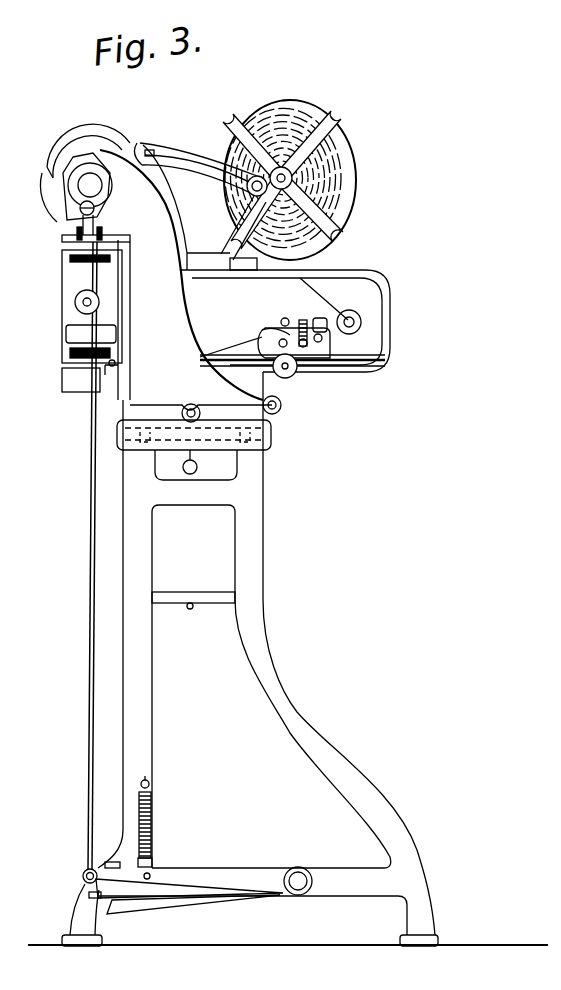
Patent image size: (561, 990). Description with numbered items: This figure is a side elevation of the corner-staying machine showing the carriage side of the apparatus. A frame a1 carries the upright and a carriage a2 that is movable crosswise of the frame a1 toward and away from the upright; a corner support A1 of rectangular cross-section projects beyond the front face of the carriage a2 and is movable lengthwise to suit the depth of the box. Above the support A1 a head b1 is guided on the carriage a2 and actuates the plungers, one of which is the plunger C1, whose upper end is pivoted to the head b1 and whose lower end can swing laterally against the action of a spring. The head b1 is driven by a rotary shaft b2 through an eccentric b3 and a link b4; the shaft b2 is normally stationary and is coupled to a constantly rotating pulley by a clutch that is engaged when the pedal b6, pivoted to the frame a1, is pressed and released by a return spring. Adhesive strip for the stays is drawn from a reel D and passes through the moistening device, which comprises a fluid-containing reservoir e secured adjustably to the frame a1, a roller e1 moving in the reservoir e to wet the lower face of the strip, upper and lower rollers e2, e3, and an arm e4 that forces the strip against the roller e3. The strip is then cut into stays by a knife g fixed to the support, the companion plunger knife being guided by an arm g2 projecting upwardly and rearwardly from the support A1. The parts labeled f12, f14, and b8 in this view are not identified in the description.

The frame a1 is at (232, 548).
The carriage a2 is at (118, 415).
The reel D is at (338, 121).
The strut of spool arm f14 is at (232, 225).
The spool-carrying arm f12 is at (185, 150).
The eccentric b3 is at (68, 152).
The rotary shaft b2 is at (90, 187).
The link b4 is at (77, 229).
The head b1 is at (62, 258).
The plunger C1 is at (62, 330).
The support A1 is at (66, 392).
The knife g is at (112, 372).
The arm g2 is at (115, 363).
The fluid-containing reservoir e is at (318, 355).
The roller e1 is at (275, 332).
The upper roller e2 is at (284, 318).
The arm e4 is at (318, 318).
The lower roller e3 is at (322, 338).
The retracting spring b8 is at (153, 838).
The pedal b6 is at (108, 910).